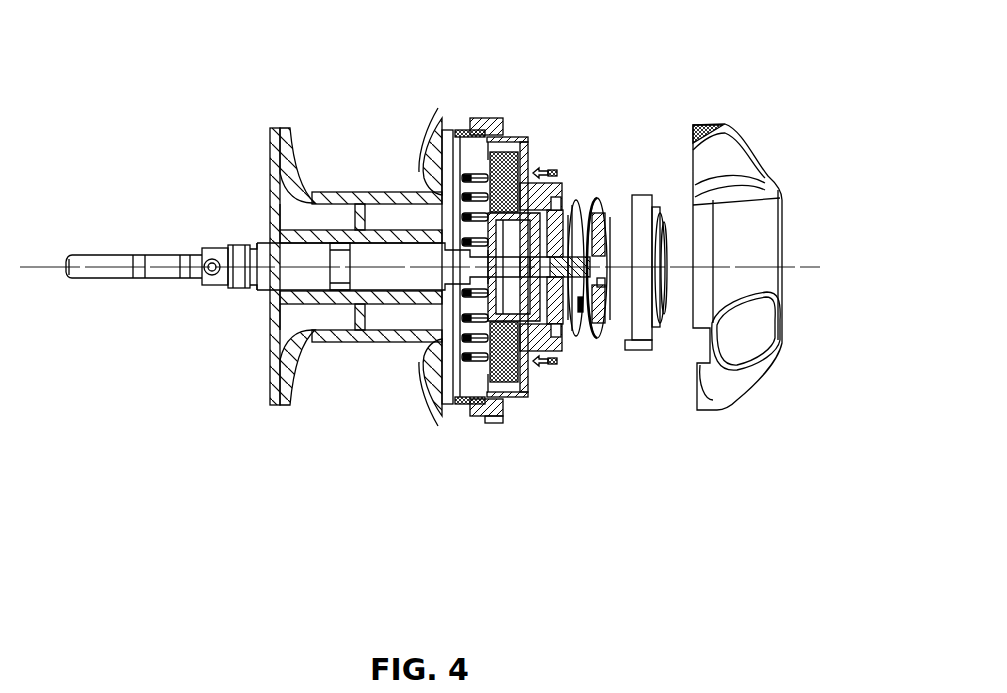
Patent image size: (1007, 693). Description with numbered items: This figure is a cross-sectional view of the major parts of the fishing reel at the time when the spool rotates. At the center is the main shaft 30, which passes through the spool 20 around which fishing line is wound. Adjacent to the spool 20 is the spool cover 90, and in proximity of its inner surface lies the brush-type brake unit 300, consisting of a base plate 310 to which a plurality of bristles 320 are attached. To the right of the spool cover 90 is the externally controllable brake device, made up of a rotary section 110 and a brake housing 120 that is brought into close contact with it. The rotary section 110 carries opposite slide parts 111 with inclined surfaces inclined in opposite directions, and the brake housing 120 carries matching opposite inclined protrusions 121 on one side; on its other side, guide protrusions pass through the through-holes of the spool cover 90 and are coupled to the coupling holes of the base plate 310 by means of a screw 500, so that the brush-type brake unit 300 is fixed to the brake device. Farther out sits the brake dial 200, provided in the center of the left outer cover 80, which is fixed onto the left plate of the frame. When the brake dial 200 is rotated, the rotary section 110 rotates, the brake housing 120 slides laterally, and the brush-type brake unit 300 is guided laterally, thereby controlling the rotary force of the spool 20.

The spool 20 is at (312, 192).
The main shaft 30 is at (374, 368).
The brush-type brake unit 300 is at (474, 383).
The bristles 320 is at (468, 174).
The spool cover 90 is at (500, 120).
The base plate 310 is at (508, 158).
The screw 500 is at (560, 183).
The brake housing 120 is at (570, 205).
The inclined protrusions 121 is at (580, 318).
The rotary section 110 is at (607, 327).
The slide parts 111 is at (590, 330).
The brake dial 200 is at (640, 345).
The left outer cover 80 is at (745, 375).